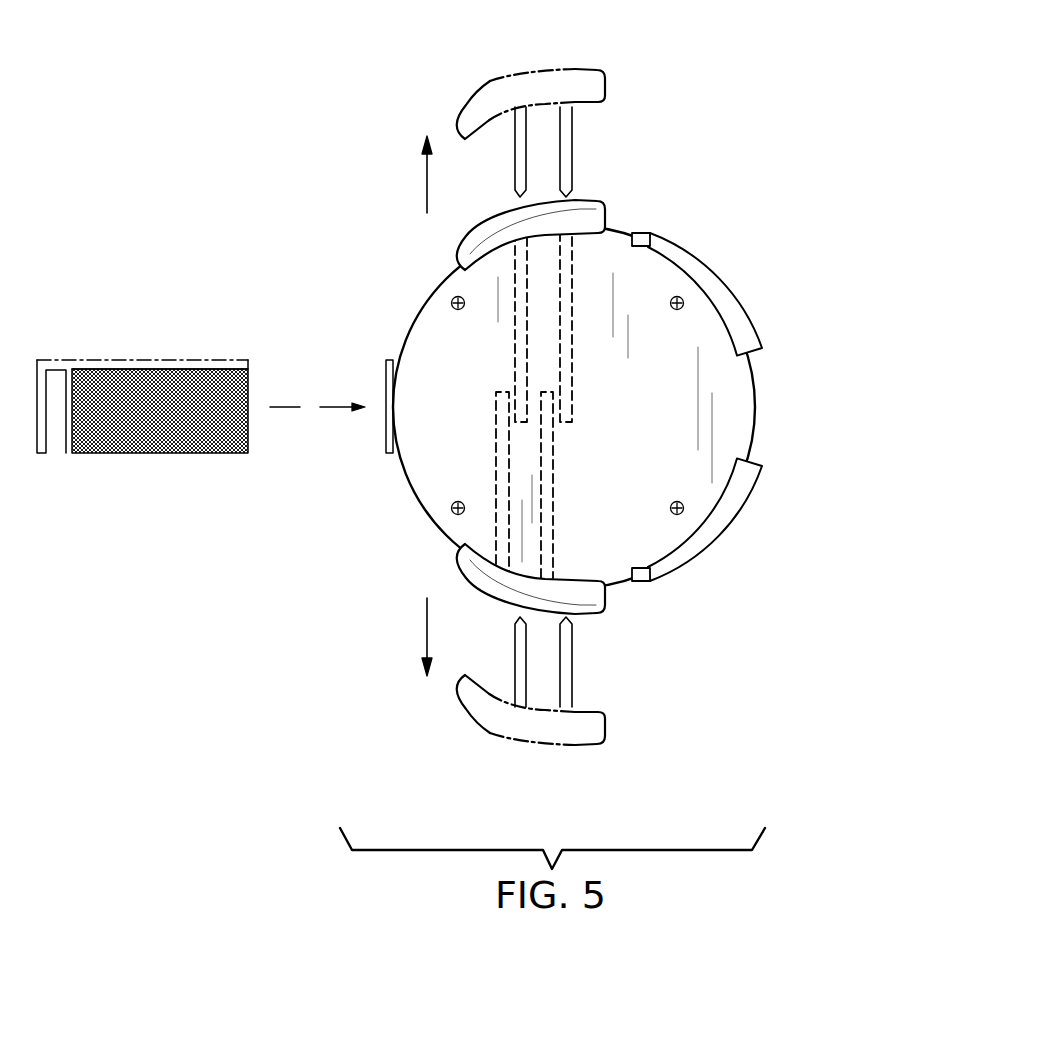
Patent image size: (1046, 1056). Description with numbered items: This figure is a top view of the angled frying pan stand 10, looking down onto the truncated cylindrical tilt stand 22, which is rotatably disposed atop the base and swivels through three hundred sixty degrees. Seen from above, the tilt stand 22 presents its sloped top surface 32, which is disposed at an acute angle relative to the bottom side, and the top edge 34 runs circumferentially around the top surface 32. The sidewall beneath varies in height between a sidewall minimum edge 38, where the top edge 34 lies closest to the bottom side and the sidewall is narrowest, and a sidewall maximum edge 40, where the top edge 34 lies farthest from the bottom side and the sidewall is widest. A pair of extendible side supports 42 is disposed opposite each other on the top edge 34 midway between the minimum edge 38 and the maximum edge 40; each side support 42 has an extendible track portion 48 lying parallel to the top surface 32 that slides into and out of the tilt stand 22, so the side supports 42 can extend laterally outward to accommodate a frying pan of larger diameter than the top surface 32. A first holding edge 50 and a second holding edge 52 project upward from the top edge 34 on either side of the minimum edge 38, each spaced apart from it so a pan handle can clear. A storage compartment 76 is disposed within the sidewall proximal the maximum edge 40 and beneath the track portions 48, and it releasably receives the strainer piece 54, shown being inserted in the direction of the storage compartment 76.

The angled frying pan stand 10 is at (706, 106).
The tilt stand 22 is at (693, 468).
The top surface 32 is at (660, 397).
The top edge 34 is at (617, 584).
The sidewall minimum edge 38 is at (755, 408).
The sidewall maximum edge 40 is at (400, 415).
The extendible side supports 42 is at (576, 97).
The extendible track portion 48 is at (517, 154).
The first holding edge 50 is at (707, 537).
The second holding edge 52 is at (717, 283).
The strainer piece 54 is at (137, 366).
The storage compartment 76 is at (385, 445).